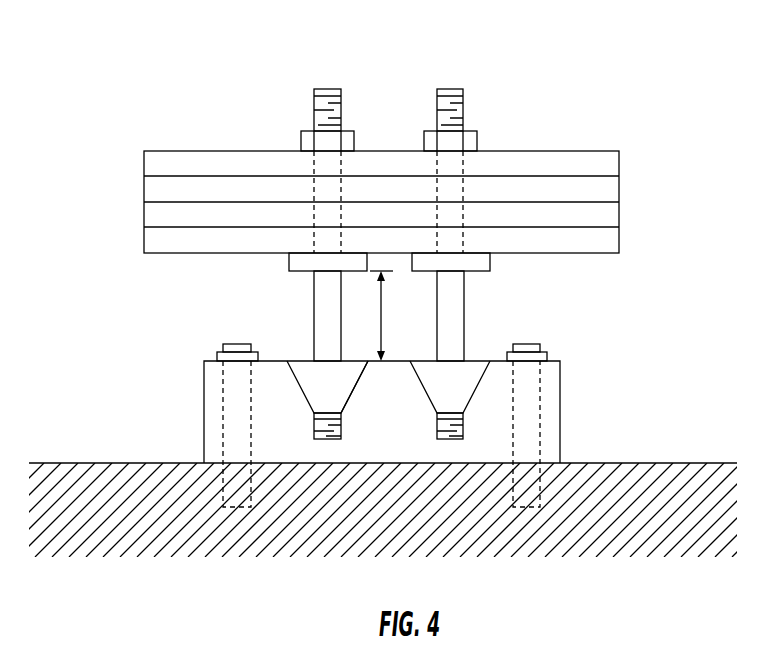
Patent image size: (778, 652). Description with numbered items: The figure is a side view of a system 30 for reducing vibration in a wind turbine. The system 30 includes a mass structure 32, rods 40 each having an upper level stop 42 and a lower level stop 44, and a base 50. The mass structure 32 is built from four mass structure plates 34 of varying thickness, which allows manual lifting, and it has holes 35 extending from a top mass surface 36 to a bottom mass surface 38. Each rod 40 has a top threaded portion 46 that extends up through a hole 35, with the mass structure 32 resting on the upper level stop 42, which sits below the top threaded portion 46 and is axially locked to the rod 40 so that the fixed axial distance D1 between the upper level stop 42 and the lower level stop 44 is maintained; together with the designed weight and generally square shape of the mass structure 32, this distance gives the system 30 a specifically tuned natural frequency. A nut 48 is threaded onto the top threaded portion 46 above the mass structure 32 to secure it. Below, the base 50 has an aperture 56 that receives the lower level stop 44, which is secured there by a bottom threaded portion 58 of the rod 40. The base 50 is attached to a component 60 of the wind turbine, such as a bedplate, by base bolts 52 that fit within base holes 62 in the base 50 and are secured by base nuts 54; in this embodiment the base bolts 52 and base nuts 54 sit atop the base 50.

The system 30 is at (389, 285).
The mass structure 32 is at (400, 188).
The mass structure plate 34 is at (381, 144).
The hole 35 is at (412, 166).
The top mass surface 36 is at (381, 150).
The bottom mass surface 38 is at (374, 262).
The rod 40 is at (377, 251).
The upper level stop 42 is at (357, 272).
The lower level stop 44 is at (382, 358).
The top threaded portion 46 is at (371, 97).
The nut 48 is at (371, 126).
The base 50 is at (395, 408).
The base bolt 52 is at (221, 337).
The base nut 54 is at (547, 335).
The aperture 56 is at (360, 398).
The bottom threaded portion 58 is at (365, 414).
The component 60 is at (389, 492).
The base hole 62 is at (347, 434).